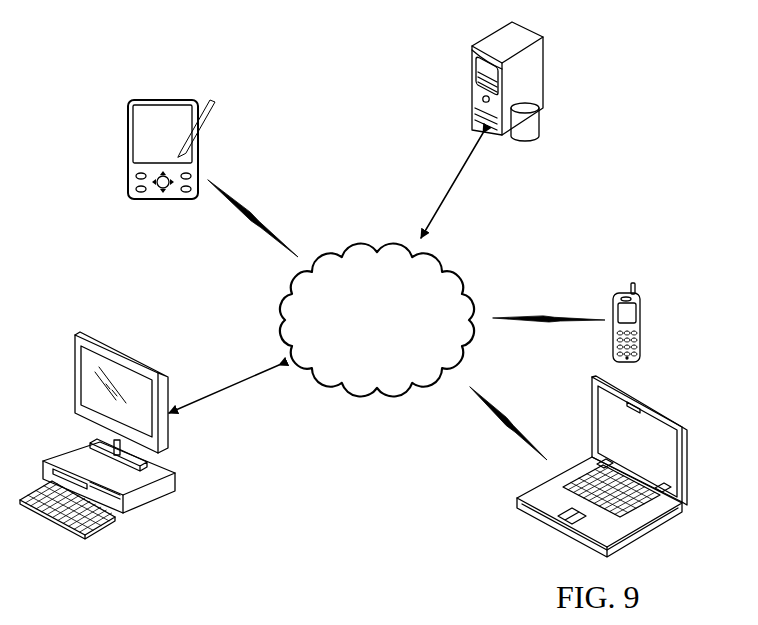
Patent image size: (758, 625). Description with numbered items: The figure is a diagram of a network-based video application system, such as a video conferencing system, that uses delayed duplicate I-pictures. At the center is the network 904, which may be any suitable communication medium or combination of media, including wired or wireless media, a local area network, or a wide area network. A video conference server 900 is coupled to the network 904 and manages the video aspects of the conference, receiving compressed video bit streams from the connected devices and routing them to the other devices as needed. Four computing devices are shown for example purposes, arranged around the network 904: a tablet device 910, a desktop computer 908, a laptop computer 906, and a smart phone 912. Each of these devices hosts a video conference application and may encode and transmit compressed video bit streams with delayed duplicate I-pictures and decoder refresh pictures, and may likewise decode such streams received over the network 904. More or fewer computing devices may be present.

The video conference server 900 is at (546, 70).
The network 904 is at (360, 352).
The laptop computer 906 is at (687, 467).
The desktop computer 908 is at (148, 510).
The tablet device 910 is at (161, 100).
The smart phone 912 is at (641, 343).